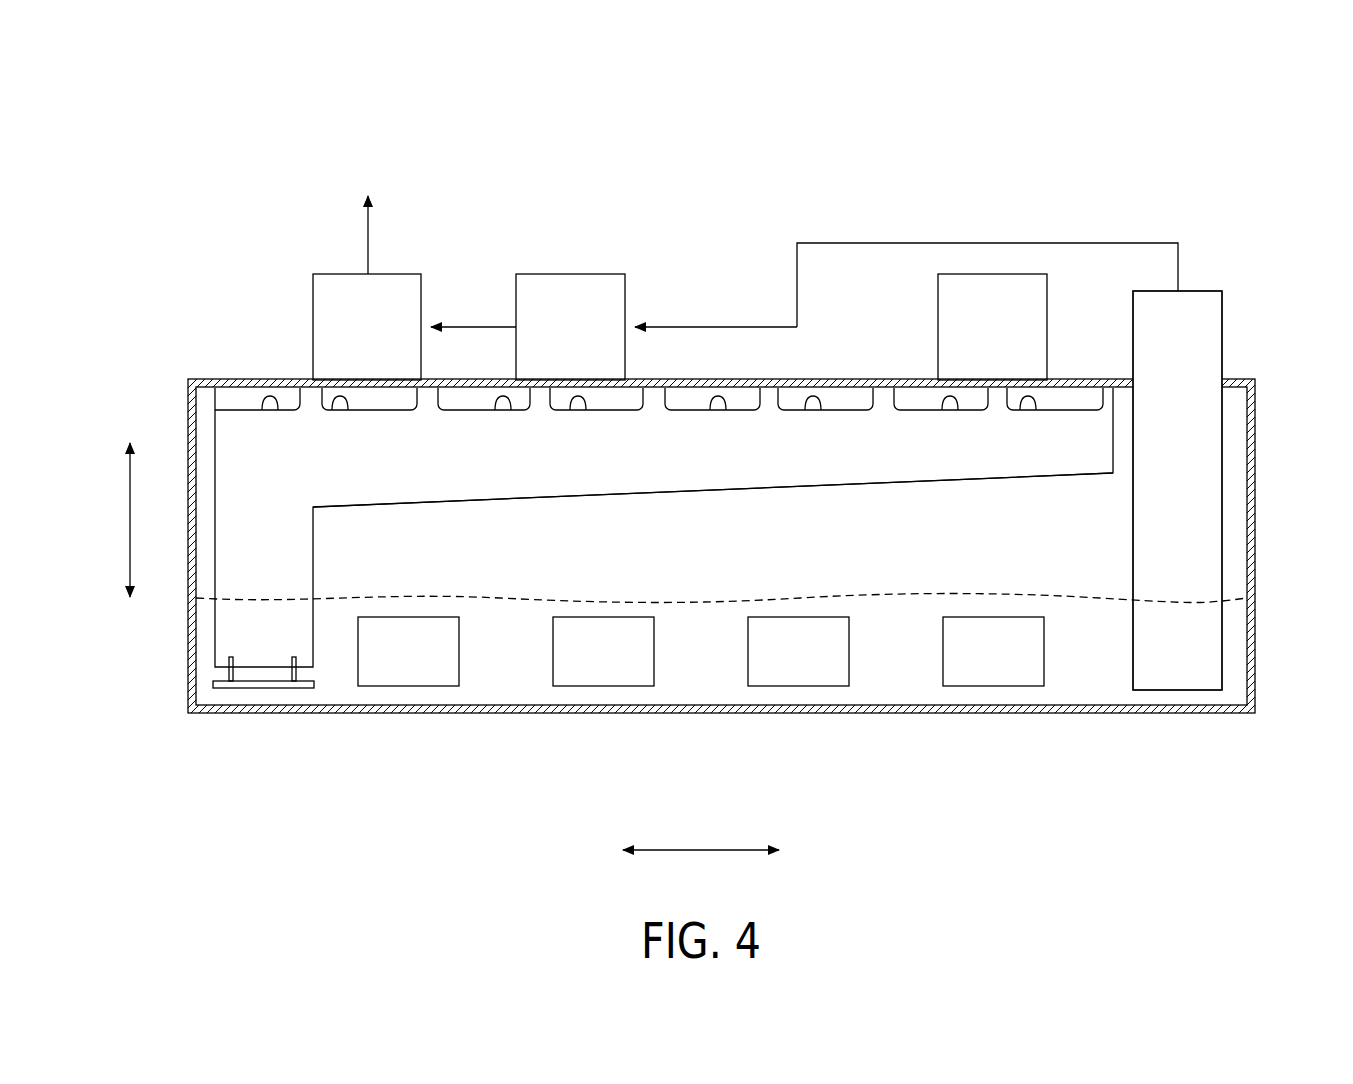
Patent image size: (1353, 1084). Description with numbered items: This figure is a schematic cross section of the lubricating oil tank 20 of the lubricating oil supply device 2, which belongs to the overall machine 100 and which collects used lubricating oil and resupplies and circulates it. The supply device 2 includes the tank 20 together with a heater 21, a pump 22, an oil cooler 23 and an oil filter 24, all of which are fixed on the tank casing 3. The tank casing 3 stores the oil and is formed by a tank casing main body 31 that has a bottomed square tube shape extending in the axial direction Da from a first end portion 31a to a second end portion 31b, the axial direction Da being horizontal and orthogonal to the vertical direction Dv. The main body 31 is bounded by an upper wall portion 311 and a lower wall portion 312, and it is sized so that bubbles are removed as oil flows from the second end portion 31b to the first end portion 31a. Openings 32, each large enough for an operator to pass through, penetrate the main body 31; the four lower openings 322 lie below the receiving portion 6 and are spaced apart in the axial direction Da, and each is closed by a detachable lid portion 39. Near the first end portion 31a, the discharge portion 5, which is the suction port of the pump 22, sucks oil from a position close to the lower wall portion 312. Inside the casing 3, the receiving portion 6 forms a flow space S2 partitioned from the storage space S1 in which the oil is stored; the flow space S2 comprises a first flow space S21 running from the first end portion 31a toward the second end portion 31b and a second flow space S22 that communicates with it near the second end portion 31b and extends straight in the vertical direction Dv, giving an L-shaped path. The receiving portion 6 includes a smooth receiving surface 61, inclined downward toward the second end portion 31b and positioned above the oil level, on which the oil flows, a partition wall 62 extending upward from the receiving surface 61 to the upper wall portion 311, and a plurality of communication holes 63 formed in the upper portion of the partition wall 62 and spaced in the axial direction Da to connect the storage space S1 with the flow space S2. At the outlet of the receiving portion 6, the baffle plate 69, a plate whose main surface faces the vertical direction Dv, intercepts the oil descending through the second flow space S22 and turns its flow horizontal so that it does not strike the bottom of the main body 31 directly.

The electronic device 100 is at (1118, 108).
The lubricating oil supply device 2 is at (1212, 214).
The lubricating oil tank 20 is at (1247, 374).
The heater 21 is at (958, 307).
The pump 22 is at (1212, 321).
The oil cooler 23 is at (590, 287).
The oil filter 24 is at (330, 325).
The tank casing 3 is at (180, 661).
The tank casing main body 31 is at (190, 688).
The upper wall portion 311 is at (248, 381).
The lower wall portion 312 is at (1117, 713).
The first end portion 31a is at (1255, 511).
The second end portion 31b is at (190, 533).
The openings 32 is at (691, 700).
The lower openings 322 is at (693, 697).
The lid portions 39 is at (412, 677).
The discharge portion 5 is at (1177, 689).
The receiving portion 6 is at (1041, 484).
The receiving surface 61 is at (690, 490).
The partition wall 62 is at (766, 445).
The communication hole 63 is at (270, 398).
The baffle plate 69 is at (235, 690).
The storage space S1 is at (957, 562).
The flow space S2 is at (327, 479).
The first flow space S21 is at (462, 452).
The second flow space S22 is at (245, 584).
The vertical direction Dv is at (114, 520).
The axial direction Da is at (701, 834).